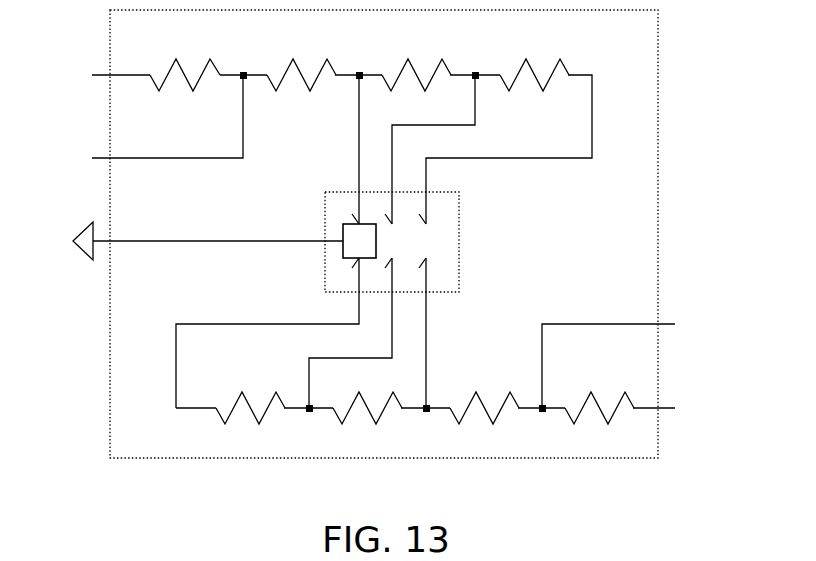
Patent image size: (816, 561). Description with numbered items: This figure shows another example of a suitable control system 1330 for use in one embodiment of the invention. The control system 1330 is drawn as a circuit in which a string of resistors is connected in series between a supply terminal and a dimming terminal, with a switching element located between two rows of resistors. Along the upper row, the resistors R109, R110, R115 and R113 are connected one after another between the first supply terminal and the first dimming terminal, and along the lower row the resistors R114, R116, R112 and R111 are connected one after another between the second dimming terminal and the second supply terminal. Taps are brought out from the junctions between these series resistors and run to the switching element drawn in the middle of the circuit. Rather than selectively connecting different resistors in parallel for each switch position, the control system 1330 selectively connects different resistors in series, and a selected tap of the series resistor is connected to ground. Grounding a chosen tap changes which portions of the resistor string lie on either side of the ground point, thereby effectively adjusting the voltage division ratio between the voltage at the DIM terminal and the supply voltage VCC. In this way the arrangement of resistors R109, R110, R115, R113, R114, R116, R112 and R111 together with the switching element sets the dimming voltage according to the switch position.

The control system 1330 is at (110, 348).
The resistor R109 is at (185, 62).
The resistor R110 is at (301, 62).
The resistor R115 is at (416, 62).
The resistor R113 is at (534, 62).
The resistor R114 is at (250, 396).
The resistor R116 is at (367, 396).
The resistor R112 is at (484, 396).
The resistor R111 is at (599, 396).